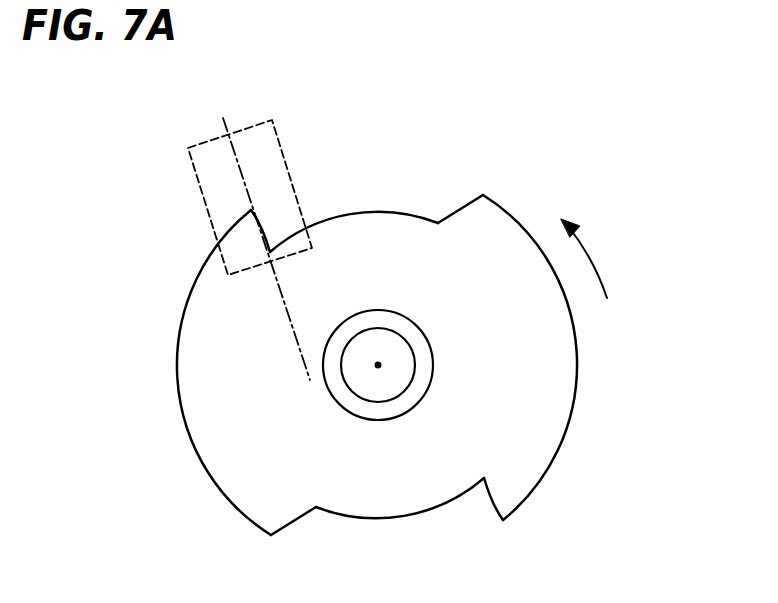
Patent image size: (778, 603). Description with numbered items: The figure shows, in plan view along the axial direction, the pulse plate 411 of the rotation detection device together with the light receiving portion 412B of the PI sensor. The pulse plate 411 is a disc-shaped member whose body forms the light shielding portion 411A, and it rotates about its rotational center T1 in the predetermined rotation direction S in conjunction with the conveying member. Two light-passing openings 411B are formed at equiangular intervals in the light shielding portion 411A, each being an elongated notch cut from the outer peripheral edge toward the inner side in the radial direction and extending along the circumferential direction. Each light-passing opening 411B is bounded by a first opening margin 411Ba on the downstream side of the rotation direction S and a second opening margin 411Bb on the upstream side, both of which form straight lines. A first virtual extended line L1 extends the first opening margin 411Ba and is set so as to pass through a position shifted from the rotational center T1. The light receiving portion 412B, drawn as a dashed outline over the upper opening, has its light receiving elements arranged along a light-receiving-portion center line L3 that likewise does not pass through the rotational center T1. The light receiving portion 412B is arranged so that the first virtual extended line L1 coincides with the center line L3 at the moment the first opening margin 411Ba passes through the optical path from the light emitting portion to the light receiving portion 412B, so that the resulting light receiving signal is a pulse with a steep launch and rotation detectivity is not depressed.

The pulse plate 411 is at (569, 364).
The light shielding portion 411A is at (495, 228).
The light-passing opening 411B is at (388, 215).
The first opening margin 411Ba is at (265, 227).
The second opening margin 411Bb is at (452, 220).
The light receiving portion 412B is at (197, 185).
The first virtual extended line L1 is at (266, 226).
The light-receiving-portion center line L3 is at (237, 158).
The rotational center T1 is at (382, 362).
The rotation direction S is at (598, 252).